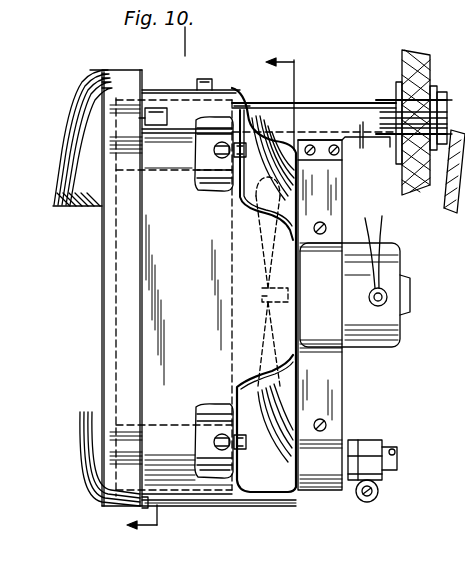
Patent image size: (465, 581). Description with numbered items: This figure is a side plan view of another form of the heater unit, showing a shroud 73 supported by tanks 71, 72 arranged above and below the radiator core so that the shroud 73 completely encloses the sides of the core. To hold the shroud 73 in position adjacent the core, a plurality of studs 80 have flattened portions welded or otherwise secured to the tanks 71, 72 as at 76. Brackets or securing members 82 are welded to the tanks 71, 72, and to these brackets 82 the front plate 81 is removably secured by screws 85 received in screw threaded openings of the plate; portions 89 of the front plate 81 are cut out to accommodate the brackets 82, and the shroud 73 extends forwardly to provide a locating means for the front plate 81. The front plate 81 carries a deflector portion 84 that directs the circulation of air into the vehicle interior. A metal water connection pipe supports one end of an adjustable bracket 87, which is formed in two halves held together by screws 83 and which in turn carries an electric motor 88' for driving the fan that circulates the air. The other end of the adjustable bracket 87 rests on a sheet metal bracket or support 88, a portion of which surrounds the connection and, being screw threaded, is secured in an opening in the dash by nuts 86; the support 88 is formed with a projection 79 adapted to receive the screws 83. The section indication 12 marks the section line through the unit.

The section line 12- 12 is at (224, 294).
The tank 71 is at (243, 100).
The tank 72 is at (228, 500).
The shroud 73 is at (150, 345).
The flattened portions 76 is at (200, 157).
The projection 79 is at (345, 150).
The stud 80 is at (226, 175).
The front plate 81 is at (116, 247).
The bracket 82 is at (152, 108).
The screw 83 is at (322, 226).
The deflector portion 84 is at (78, 161).
The screw 85 is at (135, 515).
The nut 86 is at (402, 78).
The adjustable bracket 87 is at (335, 375).
The support 88 is at (339, 109).
The electric motor 88' is at (371, 281).
The cut out portions 89 is at (170, 118).